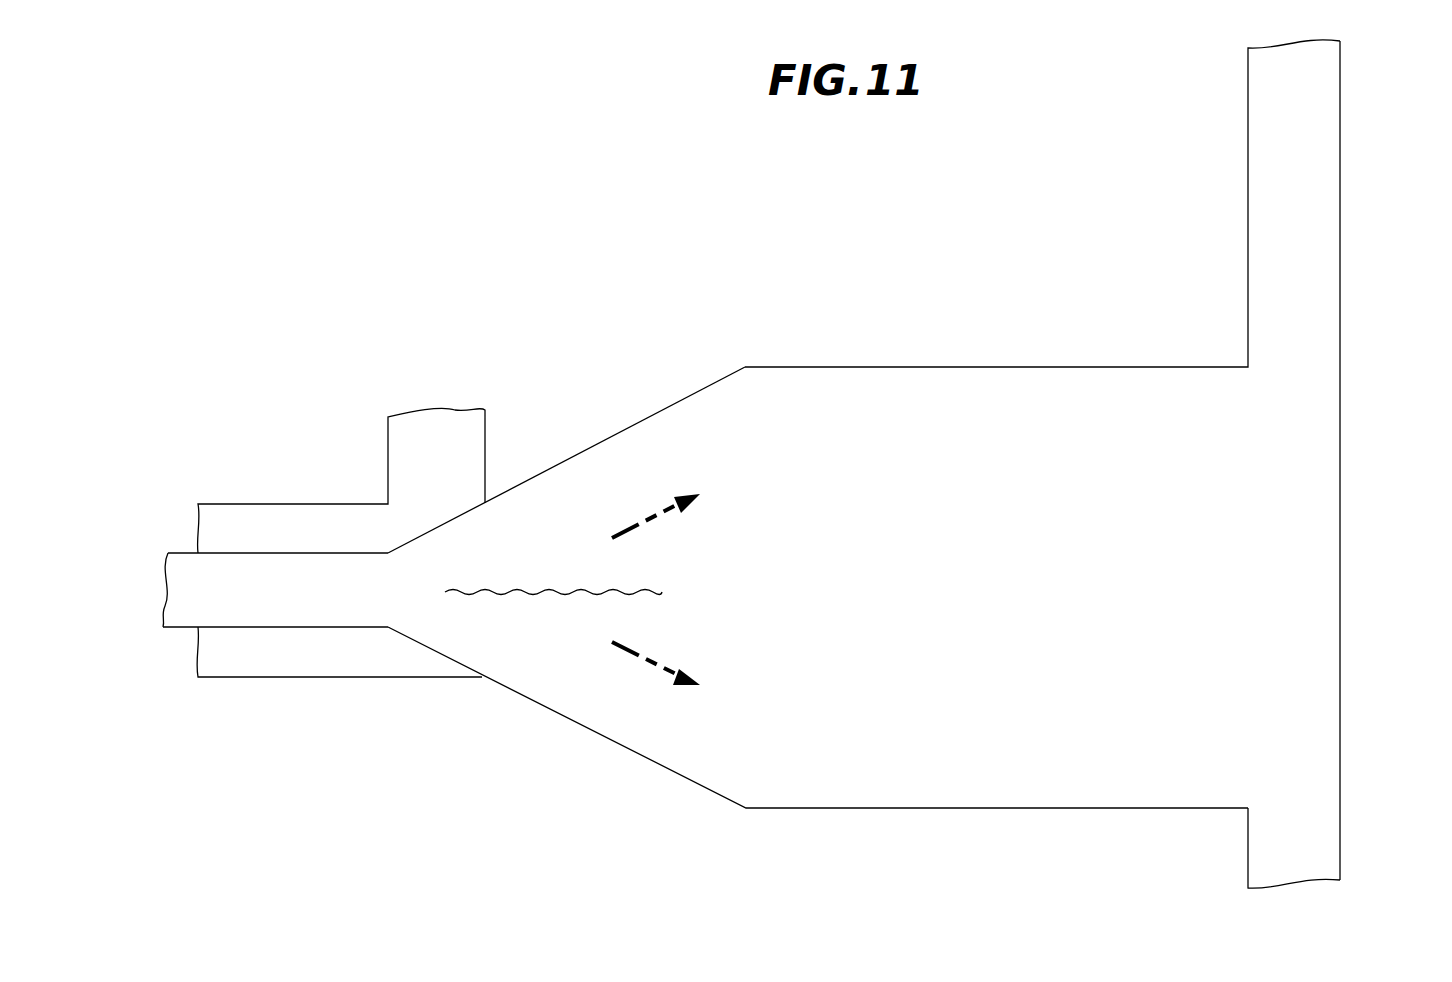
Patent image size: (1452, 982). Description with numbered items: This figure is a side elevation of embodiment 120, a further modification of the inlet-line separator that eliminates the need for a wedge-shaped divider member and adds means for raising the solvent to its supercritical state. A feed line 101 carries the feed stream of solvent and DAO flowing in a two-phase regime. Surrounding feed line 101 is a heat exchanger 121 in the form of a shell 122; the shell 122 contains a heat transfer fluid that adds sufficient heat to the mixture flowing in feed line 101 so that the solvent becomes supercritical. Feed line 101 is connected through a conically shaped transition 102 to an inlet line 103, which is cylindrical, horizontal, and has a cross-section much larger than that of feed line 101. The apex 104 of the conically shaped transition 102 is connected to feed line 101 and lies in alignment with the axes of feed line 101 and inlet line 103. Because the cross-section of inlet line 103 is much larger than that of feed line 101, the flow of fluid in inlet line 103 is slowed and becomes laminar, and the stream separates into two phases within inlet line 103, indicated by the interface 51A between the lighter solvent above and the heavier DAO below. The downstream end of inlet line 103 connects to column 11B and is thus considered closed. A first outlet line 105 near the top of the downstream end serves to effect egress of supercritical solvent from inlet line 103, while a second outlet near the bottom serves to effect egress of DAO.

The embodiment 120 is at (678, 238).
The heat exchanger 121 is at (265, 506).
The shell 122 is at (337, 668).
The feed line 101 is at (245, 628).
The conically shaped transition 102 is at (616, 432).
The inlet line 103 is at (960, 811).
The apex 104 is at (1256, 862).
The first outlet line 105 is at (1256, 298).
The interface between solvent and DAO 51A is at (556, 590).
The column 11B is at (1340, 540).